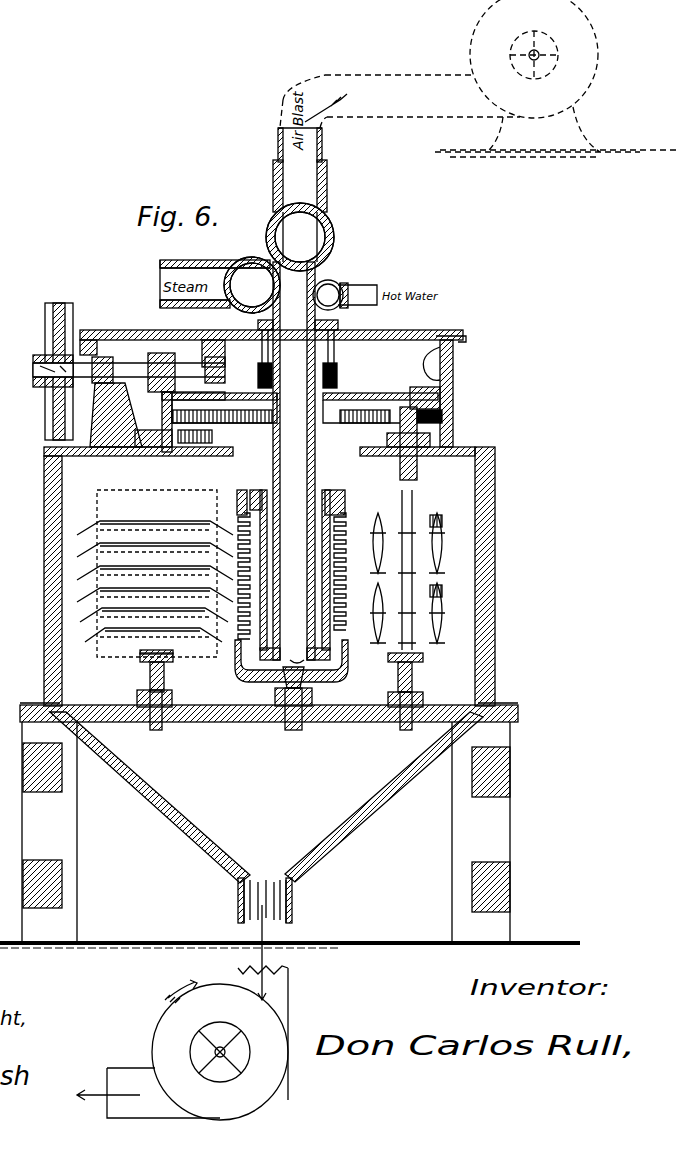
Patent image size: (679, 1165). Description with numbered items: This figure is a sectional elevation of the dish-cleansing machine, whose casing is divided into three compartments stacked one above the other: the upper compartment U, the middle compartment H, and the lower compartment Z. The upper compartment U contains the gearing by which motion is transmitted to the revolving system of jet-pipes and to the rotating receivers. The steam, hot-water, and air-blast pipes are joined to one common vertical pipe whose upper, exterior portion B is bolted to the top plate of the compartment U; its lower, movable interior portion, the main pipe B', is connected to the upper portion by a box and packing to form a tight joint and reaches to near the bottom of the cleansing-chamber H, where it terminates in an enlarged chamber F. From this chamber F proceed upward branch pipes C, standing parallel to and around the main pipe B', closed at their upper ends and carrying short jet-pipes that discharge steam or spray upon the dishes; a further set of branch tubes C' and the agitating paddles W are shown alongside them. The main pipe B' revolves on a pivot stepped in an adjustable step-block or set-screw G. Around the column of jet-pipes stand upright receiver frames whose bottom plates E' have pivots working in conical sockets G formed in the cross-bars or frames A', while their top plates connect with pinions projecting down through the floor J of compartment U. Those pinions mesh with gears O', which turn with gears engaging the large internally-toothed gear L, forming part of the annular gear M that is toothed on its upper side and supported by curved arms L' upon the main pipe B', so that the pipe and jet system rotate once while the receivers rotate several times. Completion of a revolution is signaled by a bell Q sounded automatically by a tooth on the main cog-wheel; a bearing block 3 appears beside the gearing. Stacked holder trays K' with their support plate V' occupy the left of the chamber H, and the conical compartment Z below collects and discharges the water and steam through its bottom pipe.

The upper portion of vertical pipe B is at (300, 202).
The main pipe B' is at (294, 462).
The upper compartment U is at (275, 388).
The bell Q is at (424, 362).
The annular gear M is at (289, 416).
The large internally-toothed gear L is at (224, 408).
The curved arms L' is at (380, 535).
The gears O' is at (182, 438).
The bearing block 3 is at (447, 419).
The floor of compartment U J is at (259, 459).
The middle compartment H is at (268, 576).
The cross-bars or frames A' is at (269, 707).
The bottom plate of receiver E' is at (146, 672).
The adjustable step-block or set-screw G is at (291, 709).
The enlarged part or chamber F is at (291, 677).
The trays K' is at (155, 573).
The tray support plate V' is at (156, 645).
The branch pipes C is at (259, 575).
The heating tube C' is at (326, 575).
The agitator paddles W is at (406, 573).
The lower compartment Z is at (266, 856).